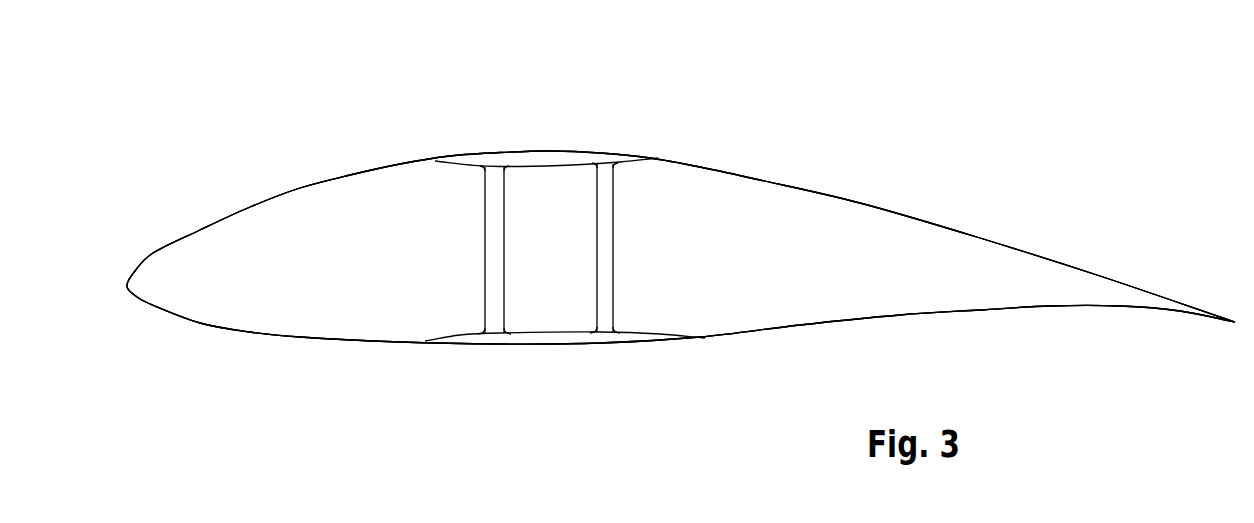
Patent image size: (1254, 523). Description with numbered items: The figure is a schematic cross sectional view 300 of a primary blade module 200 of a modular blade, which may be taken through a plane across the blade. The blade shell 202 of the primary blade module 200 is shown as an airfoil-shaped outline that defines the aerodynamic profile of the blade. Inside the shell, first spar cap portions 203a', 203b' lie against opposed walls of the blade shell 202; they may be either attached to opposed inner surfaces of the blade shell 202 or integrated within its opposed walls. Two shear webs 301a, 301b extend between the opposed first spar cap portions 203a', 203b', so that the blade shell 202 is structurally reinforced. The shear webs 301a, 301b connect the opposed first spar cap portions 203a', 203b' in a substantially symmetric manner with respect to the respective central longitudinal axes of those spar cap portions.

The primary blade module 200 is at (1025, 208).
The blade shell 202 is at (862, 198).
The cross sectional view 300 is at (195, 137).
The first spar cap portion 203a' is at (546, 102).
The first spar cap portion 203b' is at (565, 398).
The shear web 301a is at (495, 287).
The shear web 301b is at (605, 248).